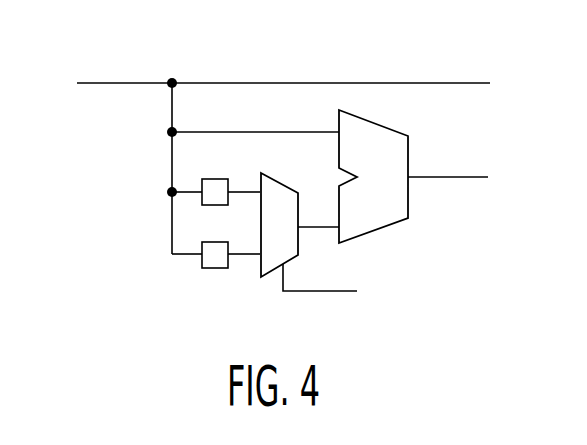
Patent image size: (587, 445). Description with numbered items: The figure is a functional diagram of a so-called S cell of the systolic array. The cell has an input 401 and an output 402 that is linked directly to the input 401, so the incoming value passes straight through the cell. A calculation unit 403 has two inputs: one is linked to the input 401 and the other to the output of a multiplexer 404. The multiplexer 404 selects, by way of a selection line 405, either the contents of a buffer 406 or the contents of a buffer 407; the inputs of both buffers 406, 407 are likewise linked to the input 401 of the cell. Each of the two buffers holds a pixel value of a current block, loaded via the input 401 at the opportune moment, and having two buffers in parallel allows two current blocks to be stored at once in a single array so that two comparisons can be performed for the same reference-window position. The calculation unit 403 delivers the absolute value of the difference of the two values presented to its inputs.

The input 401 is at (104, 84).
The output 402 is at (415, 83).
The calculation unit 403 is at (375, 122).
The multiplexer 404 is at (275, 180).
The selection line 405 is at (307, 291).
The buffer 406 is at (213, 179).
The buffer 407 is at (212, 268).